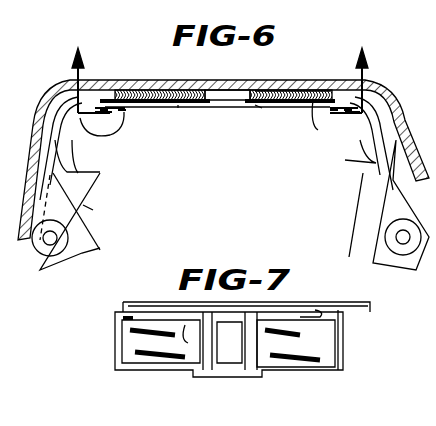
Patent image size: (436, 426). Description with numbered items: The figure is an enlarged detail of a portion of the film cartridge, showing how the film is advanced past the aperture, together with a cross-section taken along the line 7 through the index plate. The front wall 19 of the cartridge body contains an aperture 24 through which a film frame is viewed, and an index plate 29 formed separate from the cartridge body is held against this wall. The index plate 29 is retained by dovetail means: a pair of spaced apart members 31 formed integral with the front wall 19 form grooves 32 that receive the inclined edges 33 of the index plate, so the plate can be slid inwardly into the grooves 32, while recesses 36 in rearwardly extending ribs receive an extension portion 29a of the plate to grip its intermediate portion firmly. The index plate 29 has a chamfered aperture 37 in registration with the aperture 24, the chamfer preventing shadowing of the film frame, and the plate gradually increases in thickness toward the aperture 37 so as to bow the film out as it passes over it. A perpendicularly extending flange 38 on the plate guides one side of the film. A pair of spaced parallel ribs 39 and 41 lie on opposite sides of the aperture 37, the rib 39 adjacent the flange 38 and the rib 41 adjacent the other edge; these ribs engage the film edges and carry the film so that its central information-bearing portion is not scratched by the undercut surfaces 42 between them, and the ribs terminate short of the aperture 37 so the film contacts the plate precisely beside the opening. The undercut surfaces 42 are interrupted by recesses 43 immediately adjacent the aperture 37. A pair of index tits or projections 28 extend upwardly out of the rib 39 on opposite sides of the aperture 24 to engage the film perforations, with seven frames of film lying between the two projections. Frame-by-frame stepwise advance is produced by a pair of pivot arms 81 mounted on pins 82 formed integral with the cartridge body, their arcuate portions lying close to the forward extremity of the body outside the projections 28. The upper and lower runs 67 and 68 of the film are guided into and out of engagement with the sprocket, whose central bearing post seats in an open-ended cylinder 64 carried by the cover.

In FIG. 6, the section line 7— 7 is at (90, 36).
In FIG. 6, the front wall 19 is at (163, 80).
In FIG. 7, the front wall 19 is at (64, 418).
In FIG. 6, the aperture 24 is at (192, 86).
In FIG. 6, the index tits or projections 28 is at (145, 108).
In FIG. 7, the index tits or projections 28 is at (125, 318).
In FIG. 6, the index plate 29 is at (271, 88).
In FIG. 7, the index plate 29 is at (120, 372).
In FIG. 7, the extension portion 29a is at (209, 393).
In FIG. 6, the spaced apart members 31 is at (112, 97).
In FIG. 6, the grooves 32 is at (130, 97).
In FIG. 7, the inclined edges 33 is at (342, 360).
In FIG. 7, the recesses 36 is at (11, 419).
In FIG. 6, the chamfered aperture 37 is at (221, 88).
In FIG. 7, the chamfered aperture 37 is at (116, 346).
In FIG. 7, the flange 38 is at (157, 305).
In FIG. 7, the rib 39 is at (350, 331).
In FIG. 7, the rib 41 is at (166, 372).
In FIG. 6, the undercut surfaces 42 is at (257, 110).
In FIG. 7, the undercut surfaces 42 is at (318, 350).
In FIG. 6, the recesses 43 is at (177, 108).
In FIG. 7, the recesses 43 is at (196, 360).
In FIG. 6, the open-ended cylinder 64 is at (363, 168).
In FIG. 6, the upper run 67 is at (101, 243).
In FIG. 6, the lower run 68 is at (365, 230).
In FIG. 6, the pivot arms 81 is at (90, 206).
In FIG. 6, the pins 82 is at (40, 250).